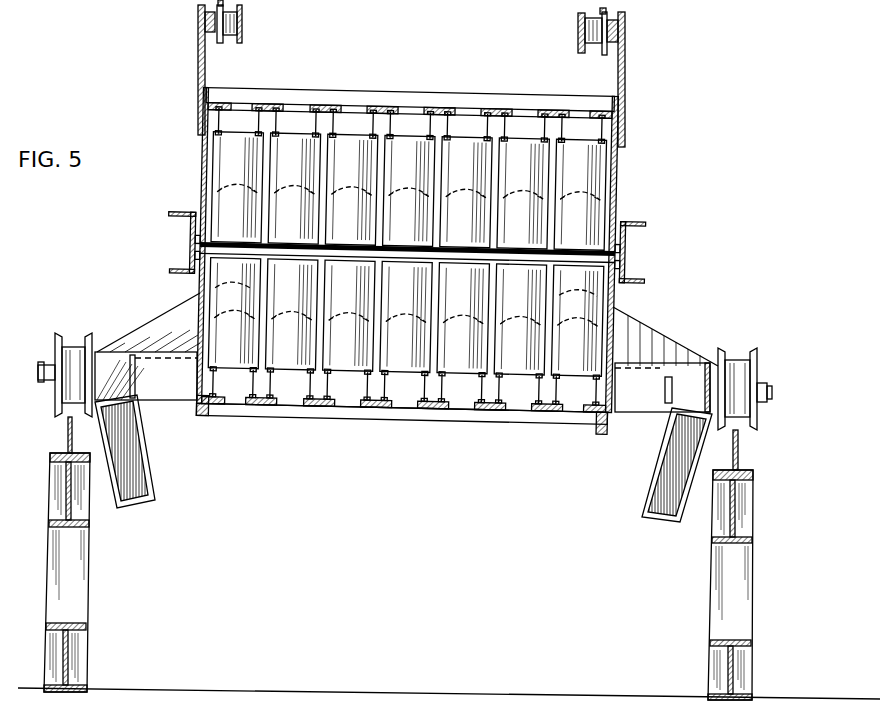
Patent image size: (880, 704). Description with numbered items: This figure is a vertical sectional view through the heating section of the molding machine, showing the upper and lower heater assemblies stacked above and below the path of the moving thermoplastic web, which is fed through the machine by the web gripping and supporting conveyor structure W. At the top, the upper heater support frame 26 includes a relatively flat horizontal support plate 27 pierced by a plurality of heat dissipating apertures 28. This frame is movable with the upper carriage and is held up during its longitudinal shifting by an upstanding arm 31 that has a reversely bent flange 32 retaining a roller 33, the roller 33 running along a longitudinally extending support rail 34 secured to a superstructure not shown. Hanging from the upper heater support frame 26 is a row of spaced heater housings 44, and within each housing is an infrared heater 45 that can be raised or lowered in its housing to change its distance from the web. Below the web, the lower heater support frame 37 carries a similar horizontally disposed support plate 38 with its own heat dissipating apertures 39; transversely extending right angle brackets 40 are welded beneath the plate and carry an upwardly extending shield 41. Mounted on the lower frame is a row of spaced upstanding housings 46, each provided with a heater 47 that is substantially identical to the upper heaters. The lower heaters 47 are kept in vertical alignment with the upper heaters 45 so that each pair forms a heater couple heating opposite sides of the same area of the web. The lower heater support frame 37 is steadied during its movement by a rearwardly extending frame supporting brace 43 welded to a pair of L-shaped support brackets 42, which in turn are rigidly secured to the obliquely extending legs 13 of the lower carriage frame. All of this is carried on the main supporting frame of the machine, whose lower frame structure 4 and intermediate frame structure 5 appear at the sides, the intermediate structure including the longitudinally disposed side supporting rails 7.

The lower frame structure 4 is at (753, 527).
The intermediate frame structure 5 is at (88, 652).
The side supporting rails 7 is at (67, 438).
The obliquely extending legs 13 is at (140, 440).
The upper heater support frame 26 is at (326, 90).
The support plate 27 is at (338, 107).
The heat dissipating apertures 28 is at (410, 110).
The upstanding arm 31 is at (200, 73).
The reversely bent flange 32 is at (198, 43).
The roller 33 is at (198, 14).
The support rail 34 is at (241, 34).
The lower heater support frame 37 is at (570, 427).
The support plate 38 is at (487, 412).
The heat dissipating apertures 39 is at (462, 408).
The right angle brackets 40 is at (594, 418).
The shield 41 is at (222, 392).
The L-shaped support brackets 42 is at (157, 362).
The frame supporting brace 43 is at (167, 323).
The heater housings 44 is at (223, 175).
The heater 45 is at (440, 110).
The housings 46 is at (252, 382).
The heater 47 is at (222, 283).
The web gripping and supporting conveyor structure W is at (627, 238).